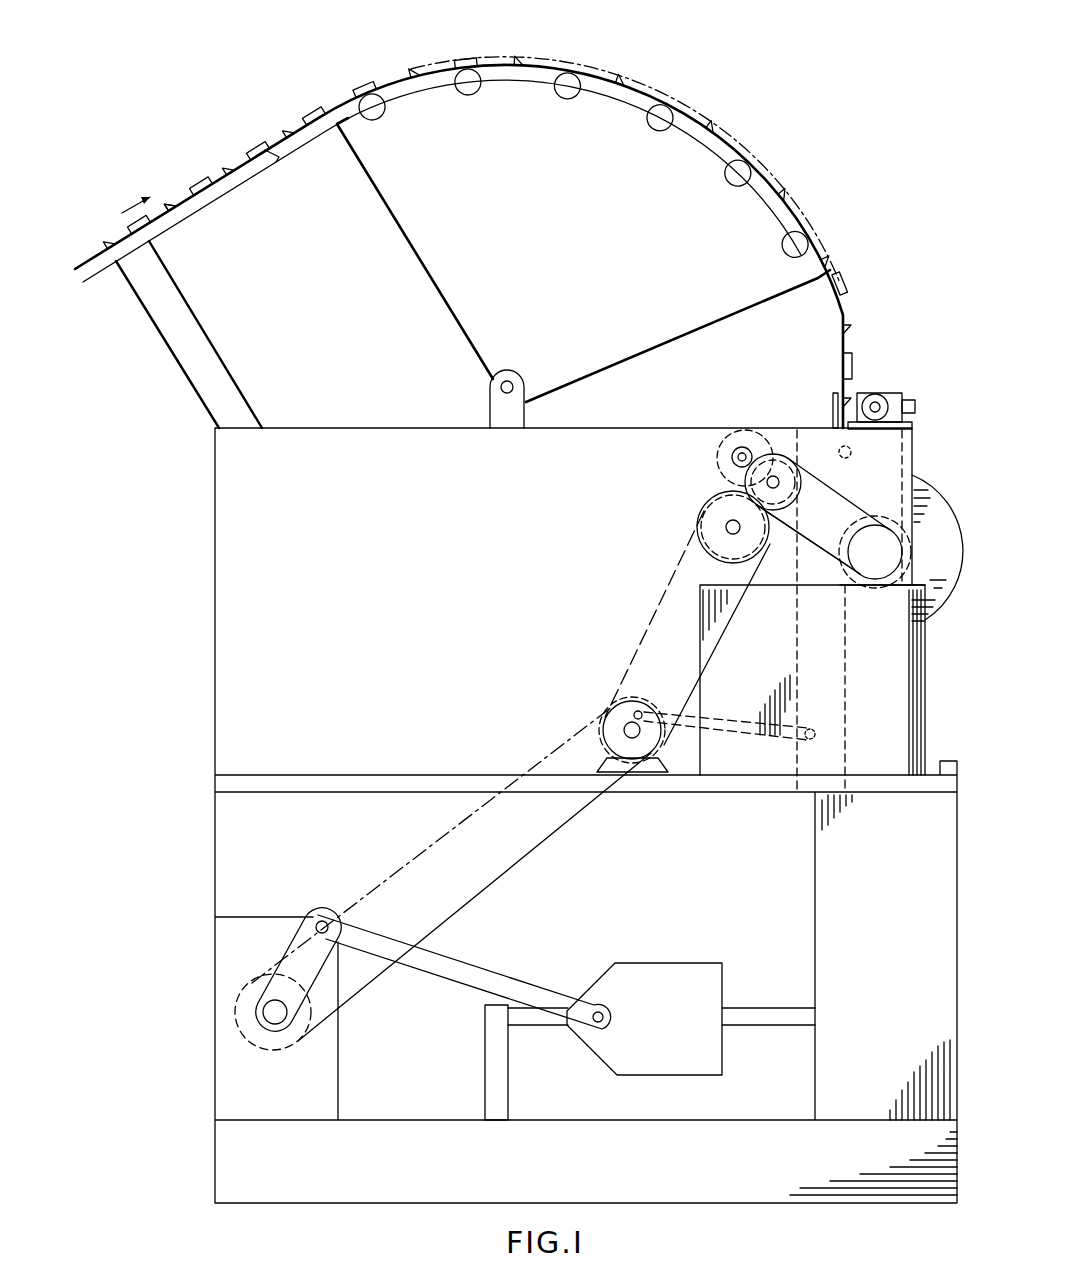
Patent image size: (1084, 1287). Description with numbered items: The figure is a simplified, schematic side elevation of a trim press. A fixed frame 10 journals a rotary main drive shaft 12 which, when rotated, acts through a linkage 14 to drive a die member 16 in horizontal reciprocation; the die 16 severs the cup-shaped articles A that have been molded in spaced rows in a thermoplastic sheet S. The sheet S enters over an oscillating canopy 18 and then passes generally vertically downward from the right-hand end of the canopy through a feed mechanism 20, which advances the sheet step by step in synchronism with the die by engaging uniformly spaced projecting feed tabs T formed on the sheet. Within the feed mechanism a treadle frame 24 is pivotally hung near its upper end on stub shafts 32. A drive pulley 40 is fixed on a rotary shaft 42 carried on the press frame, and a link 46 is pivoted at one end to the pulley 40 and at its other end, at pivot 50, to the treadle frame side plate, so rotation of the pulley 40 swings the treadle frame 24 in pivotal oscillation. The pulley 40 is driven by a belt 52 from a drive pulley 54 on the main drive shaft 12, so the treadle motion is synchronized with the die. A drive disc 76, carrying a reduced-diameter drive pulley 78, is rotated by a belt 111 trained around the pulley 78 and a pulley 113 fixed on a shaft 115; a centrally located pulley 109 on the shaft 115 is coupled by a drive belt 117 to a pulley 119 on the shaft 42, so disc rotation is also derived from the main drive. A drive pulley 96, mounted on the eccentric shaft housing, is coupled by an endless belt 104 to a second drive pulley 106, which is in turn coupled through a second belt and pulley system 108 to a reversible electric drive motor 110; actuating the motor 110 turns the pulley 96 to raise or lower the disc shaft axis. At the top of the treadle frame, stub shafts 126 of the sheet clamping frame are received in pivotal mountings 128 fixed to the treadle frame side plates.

The fixed frame 10 is at (232, 686).
The rotary main drive shaft 12 is at (282, 1022).
The linkage 14 is at (502, 966).
The die member 16 is at (728, 962).
The oscillating canopy 18 is at (446, 268).
The feed mechanism 20 is at (935, 632).
The treadle frame 24 is at (908, 462).
The stub shafts 32 is at (852, 450).
The drive pulley 40 is at (642, 712).
The rotary shaft 42 is at (628, 732).
The link 46 is at (686, 722).
The pivotal coupling 50 is at (812, 738).
The belt 52 is at (542, 838).
The drive pulley 54 is at (254, 1042).
The drive disc 76 is at (936, 514).
The drive pulley 78 is at (884, 586).
The drive pulley 96 is at (902, 554).
The endless belt 104 is at (823, 519).
The second drive pulley 106 is at (800, 488).
The second belt and pulley system 108 is at (749, 452).
The centrally located pulley 109 is at (712, 522).
The reversible electric drive motor 110 is at (716, 453).
The belt 111 is at (765, 570).
The pulley 113 is at (700, 538).
The shaft 115 is at (732, 534).
The drive belt 117 is at (722, 628).
The pulley 119 is at (632, 692).
The stub shafts 126 is at (880, 404).
The pivotal mountings 128 is at (910, 404).
The sheet S is at (96, 266).
The feed tabs T is at (170, 204).
The cup-shaped articles A is at (258, 146).